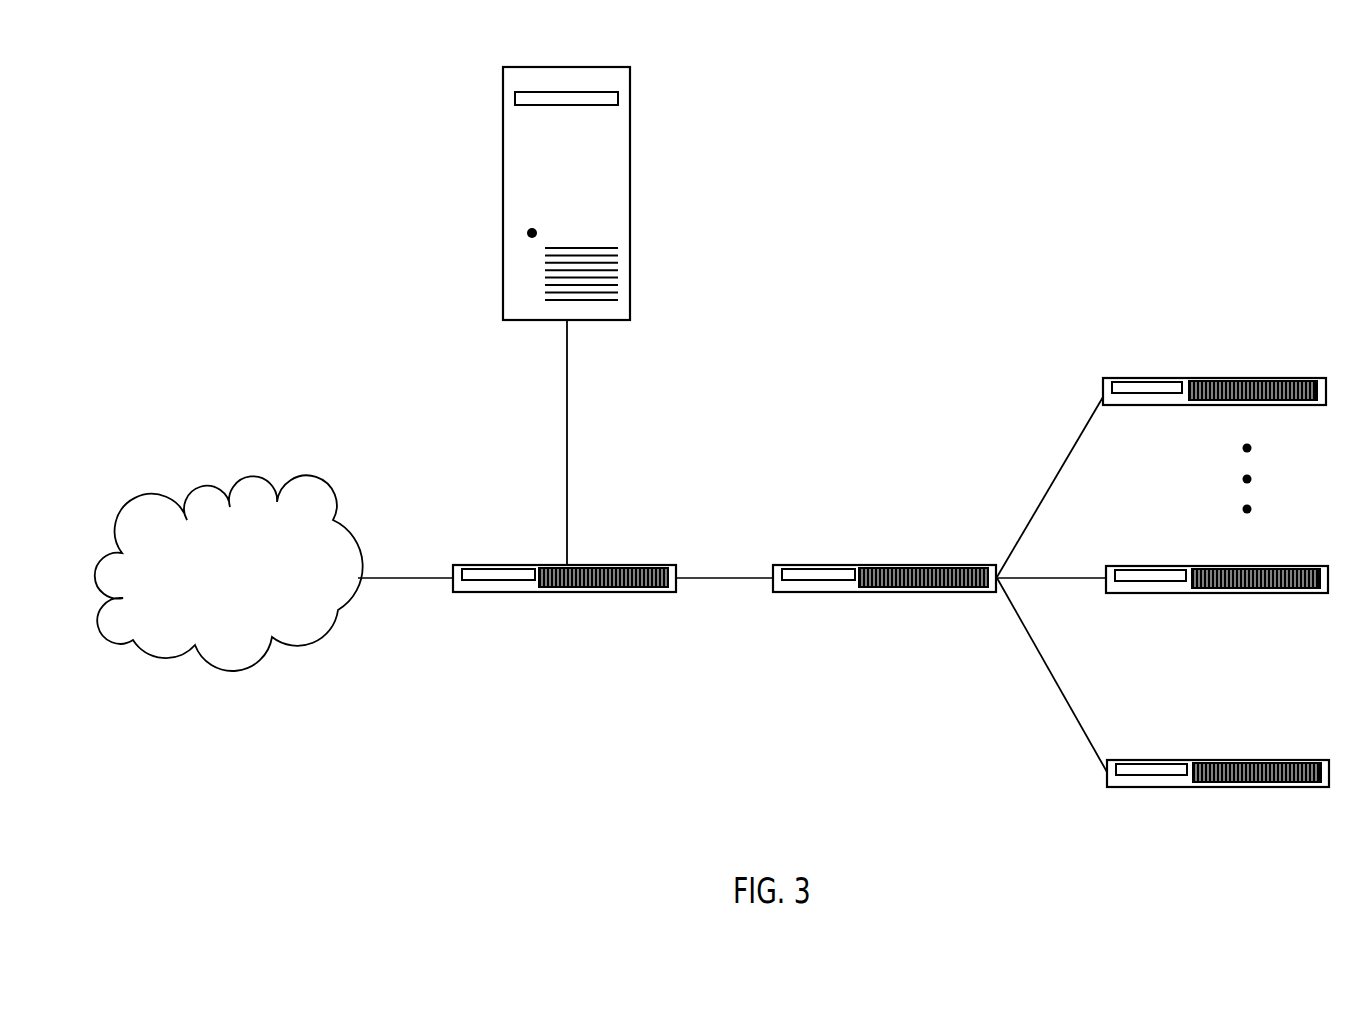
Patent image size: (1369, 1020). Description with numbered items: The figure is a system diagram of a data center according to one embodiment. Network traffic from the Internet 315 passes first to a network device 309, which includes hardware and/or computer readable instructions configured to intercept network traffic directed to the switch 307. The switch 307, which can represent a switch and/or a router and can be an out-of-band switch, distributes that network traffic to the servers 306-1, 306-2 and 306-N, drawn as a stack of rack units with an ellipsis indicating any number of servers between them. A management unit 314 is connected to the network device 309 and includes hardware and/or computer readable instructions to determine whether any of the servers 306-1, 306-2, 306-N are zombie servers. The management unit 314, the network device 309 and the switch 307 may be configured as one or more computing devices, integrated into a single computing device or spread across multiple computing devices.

The management unit 314 is at (598, 67).
The Internet 315 is at (232, 507).
The network device 309 is at (637, 565).
The switch 307 is at (940, 565).
The server 306-N is at (1286, 378).
The server 306-2 is at (1285, 566).
The server 306-1 is at (1287, 760).